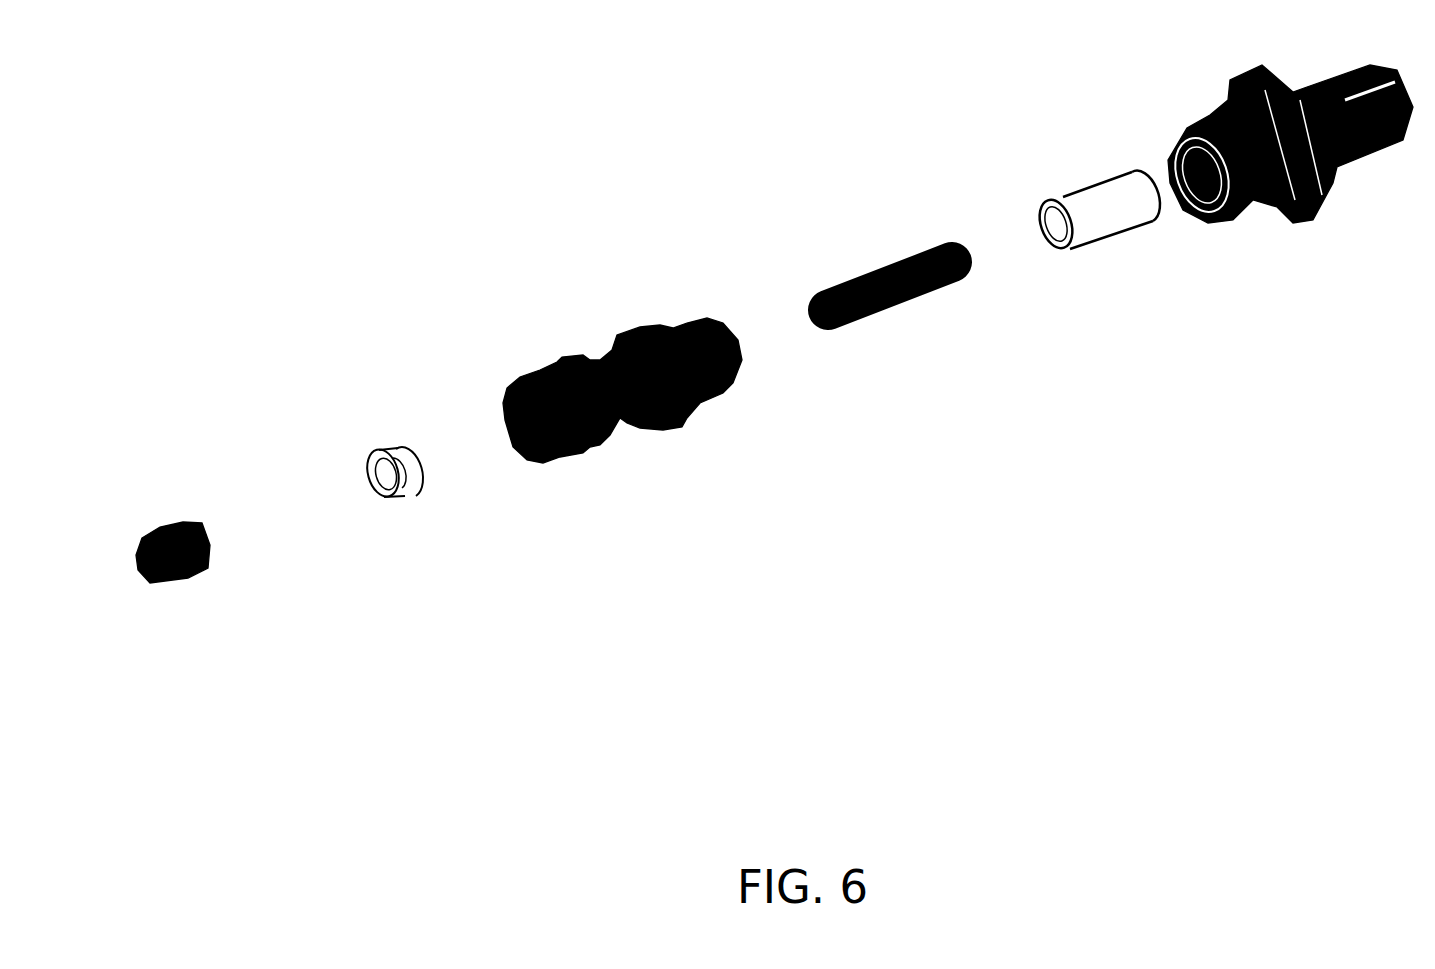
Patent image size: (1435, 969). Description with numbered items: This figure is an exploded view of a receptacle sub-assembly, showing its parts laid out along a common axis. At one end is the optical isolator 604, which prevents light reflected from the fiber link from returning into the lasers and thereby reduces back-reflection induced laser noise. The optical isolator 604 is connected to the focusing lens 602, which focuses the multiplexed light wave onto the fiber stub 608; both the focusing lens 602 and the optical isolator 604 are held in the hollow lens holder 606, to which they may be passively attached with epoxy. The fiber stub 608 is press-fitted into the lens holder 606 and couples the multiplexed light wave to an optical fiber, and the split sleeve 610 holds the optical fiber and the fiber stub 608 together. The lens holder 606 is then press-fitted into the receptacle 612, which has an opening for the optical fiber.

The focusing lens 602 is at (402, 452).
The optical isolator 604 is at (170, 526).
The lens holder 606 is at (655, 325).
The fiber stub 608 is at (890, 267).
The split sleeve 610 is at (1100, 207).
The receptacle 612 is at (1207, 117).